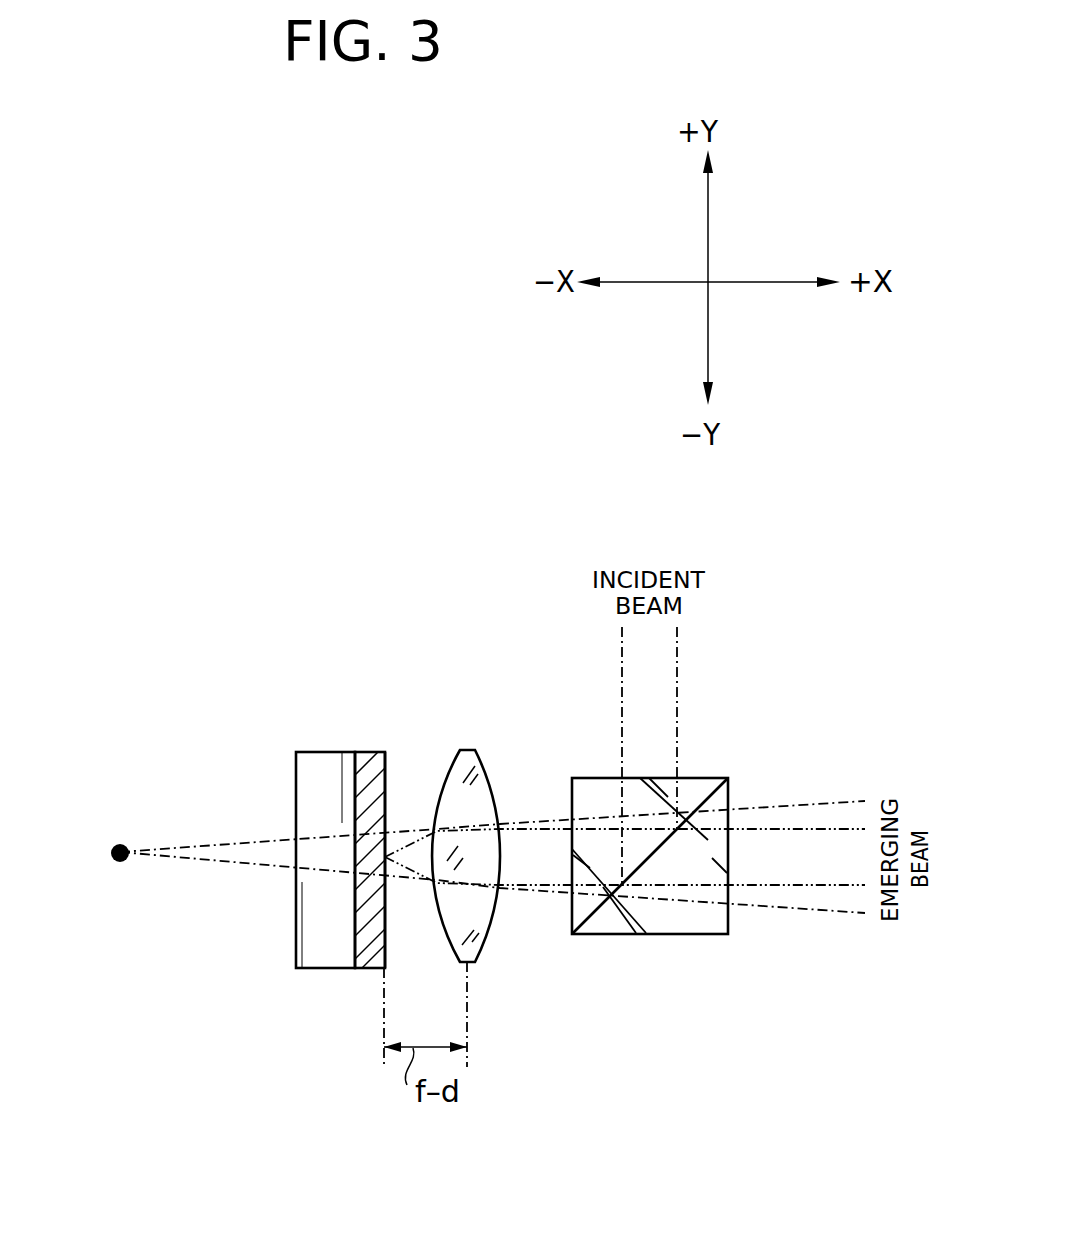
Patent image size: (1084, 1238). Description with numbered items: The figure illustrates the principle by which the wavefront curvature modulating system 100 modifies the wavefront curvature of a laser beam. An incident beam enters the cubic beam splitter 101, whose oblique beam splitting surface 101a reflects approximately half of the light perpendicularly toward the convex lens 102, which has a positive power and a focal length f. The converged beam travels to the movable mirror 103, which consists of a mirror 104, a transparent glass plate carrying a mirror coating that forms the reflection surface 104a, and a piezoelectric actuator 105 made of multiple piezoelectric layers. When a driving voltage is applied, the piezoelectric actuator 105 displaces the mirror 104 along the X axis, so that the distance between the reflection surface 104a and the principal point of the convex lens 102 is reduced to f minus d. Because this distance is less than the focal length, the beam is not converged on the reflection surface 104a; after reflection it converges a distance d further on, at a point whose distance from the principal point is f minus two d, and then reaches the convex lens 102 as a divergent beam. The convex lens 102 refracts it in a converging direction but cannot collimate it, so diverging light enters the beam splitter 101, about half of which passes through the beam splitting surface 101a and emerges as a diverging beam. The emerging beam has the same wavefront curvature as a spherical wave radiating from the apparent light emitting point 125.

The wavefront curvature modulating system 100 is at (351, 360).
The beam splitter 101 is at (619, 897).
The beam splitting surface 101a is at (592, 915).
The convex lens 102 is at (478, 813).
The movable mirror 103 is at (372, 790).
The mirror 104 is at (370, 763).
The reflection surface 104a is at (385, 774).
The piezoelectric actuator 105 is at (313, 763).
The apparent light emitting point 125 is at (114, 846).